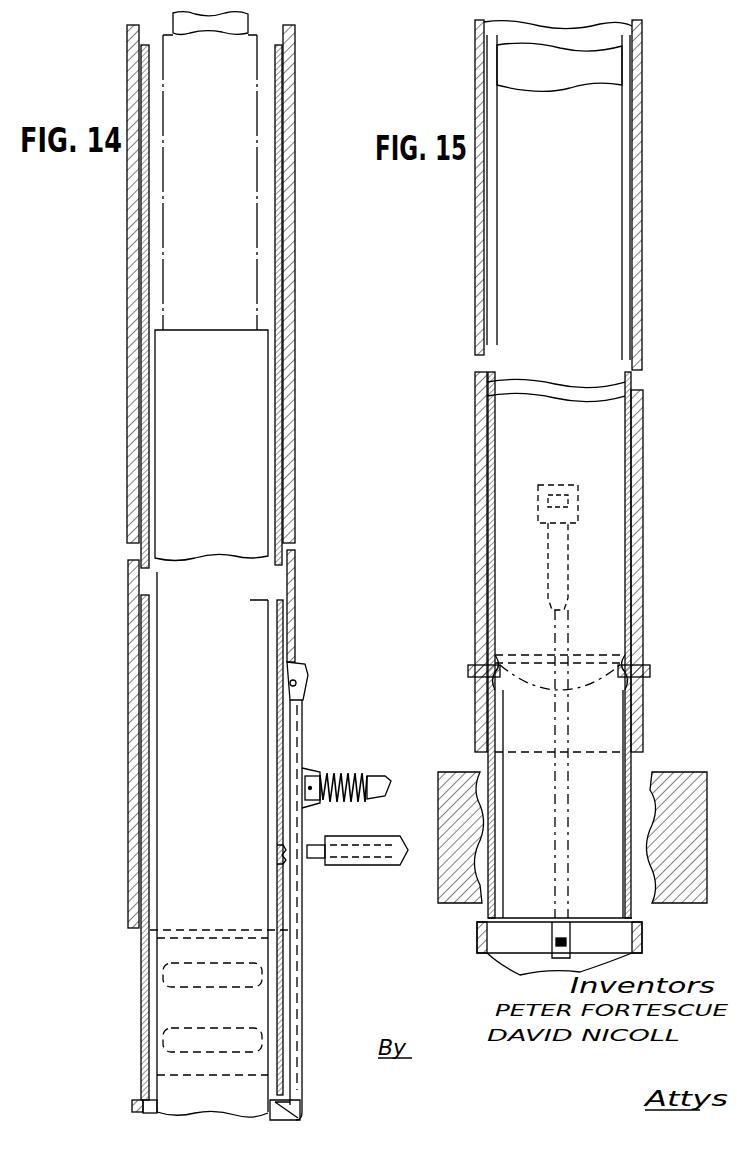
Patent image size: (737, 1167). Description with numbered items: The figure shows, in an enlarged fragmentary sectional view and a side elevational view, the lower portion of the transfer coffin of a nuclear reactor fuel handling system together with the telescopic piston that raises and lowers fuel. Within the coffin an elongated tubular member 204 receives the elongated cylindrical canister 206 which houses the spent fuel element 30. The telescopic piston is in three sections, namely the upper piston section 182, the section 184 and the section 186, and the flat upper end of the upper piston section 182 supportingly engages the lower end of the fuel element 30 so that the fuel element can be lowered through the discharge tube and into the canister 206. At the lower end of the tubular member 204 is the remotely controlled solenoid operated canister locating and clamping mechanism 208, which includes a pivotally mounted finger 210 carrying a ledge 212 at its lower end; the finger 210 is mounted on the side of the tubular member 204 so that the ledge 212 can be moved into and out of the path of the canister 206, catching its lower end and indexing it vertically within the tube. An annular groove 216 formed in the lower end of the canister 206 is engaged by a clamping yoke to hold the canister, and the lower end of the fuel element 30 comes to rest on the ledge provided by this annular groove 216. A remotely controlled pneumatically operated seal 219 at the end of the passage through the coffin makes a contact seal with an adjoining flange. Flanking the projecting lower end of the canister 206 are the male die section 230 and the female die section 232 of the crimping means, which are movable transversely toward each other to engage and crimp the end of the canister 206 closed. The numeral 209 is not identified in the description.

In FIG. 15, the fuel element 30 is at (612, 283).
In FIG. 14, the upper piston section 182 is at (252, 18).
In FIG. 14, the piston section 184 is at (262, 275).
In FIG. 14, the piston section 186 is at (283, 512).
In FIG. 14, the tubular member 204 is at (296, 420).
In FIG. 14, the canister 206 is at (280, 632).
In FIG. 15, the canister 206 is at (626, 437).
In FIG. 14, the canister locating and clamping mechanism 208 is at (305, 903).
In FIG. 15, the lower outer tube 209 is at (644, 562).
In FIG. 14, the finger 210 is at (302, 978).
In FIG. 15, the finger 210 is at (565, 802).
In FIG. 14, the ledge 212 is at (290, 1106).
In FIG. 15, the ledge 212 is at (572, 942).
In FIG. 14, the annular groove 216 is at (284, 852).
In FIG. 15, the annular groove 216 is at (640, 666).
In FIG. 14, the pneumatically operated seal 219 is at (305, 860).
In FIG. 15, the pneumatically operated seal 219 is at (466, 669).
In FIG. 15, the male die section 230 is at (666, 775).
In FIG. 15, the female die section 232 is at (452, 780).